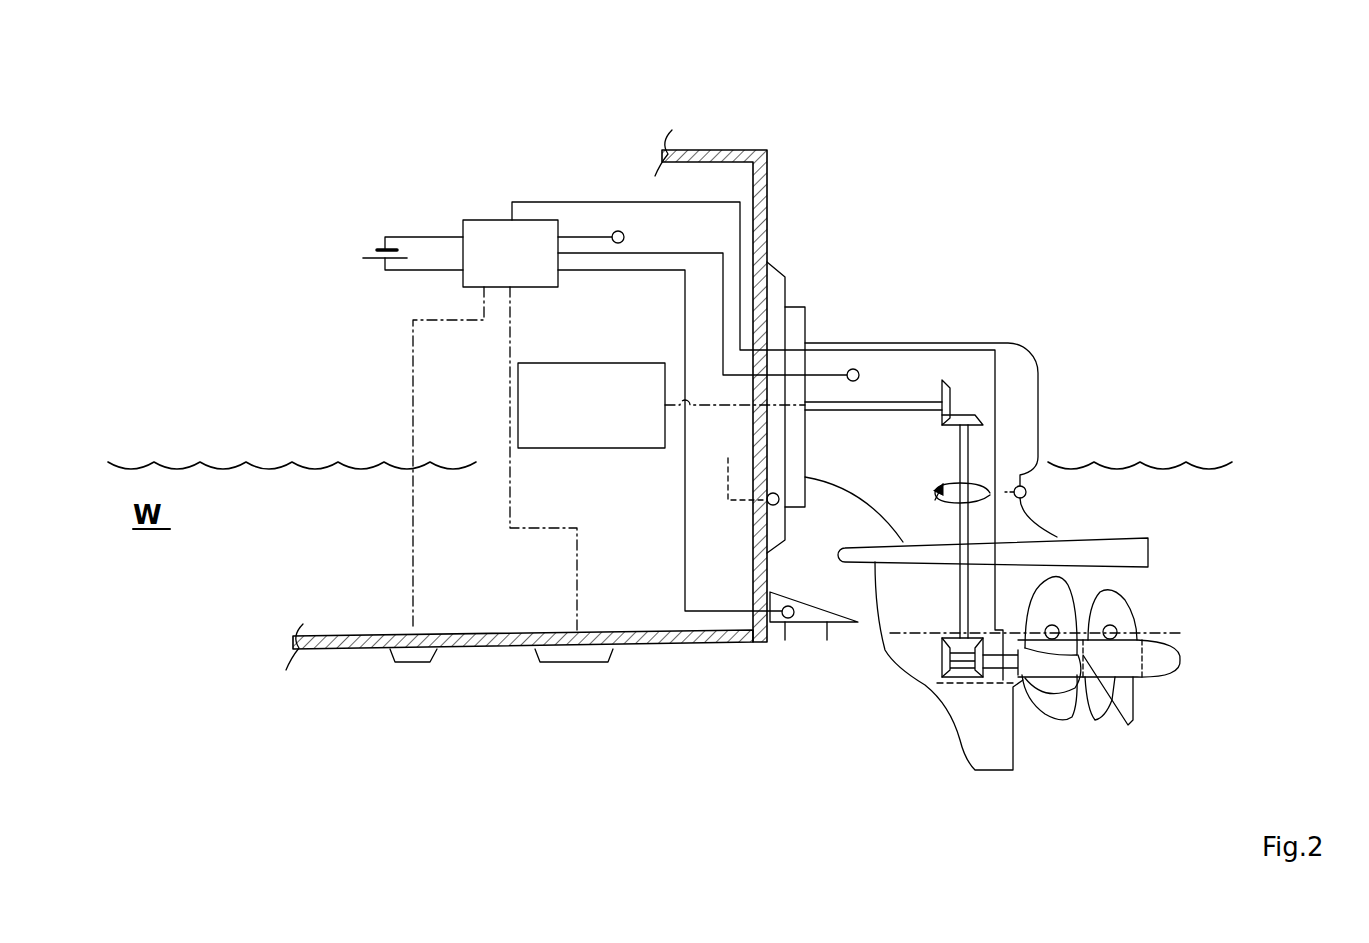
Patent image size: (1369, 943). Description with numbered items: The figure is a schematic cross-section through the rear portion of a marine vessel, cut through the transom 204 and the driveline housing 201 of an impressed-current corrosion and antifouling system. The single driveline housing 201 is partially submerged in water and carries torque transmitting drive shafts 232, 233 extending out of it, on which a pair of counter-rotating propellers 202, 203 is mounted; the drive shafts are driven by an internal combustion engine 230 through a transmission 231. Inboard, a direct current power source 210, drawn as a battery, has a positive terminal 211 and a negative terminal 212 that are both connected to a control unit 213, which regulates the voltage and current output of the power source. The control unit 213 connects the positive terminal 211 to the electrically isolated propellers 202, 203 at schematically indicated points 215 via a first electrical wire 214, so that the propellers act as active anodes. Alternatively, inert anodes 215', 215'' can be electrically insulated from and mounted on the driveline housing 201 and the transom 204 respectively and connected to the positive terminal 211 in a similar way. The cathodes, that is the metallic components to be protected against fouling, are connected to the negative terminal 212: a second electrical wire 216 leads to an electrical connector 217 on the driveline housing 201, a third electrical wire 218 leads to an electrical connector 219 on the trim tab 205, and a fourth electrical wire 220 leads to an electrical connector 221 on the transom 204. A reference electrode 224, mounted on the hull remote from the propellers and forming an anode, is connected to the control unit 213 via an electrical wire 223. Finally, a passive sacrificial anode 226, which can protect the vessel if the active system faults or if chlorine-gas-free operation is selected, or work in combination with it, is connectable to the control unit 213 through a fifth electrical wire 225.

The driveline housing 201 is at (1038, 412).
The propeller 202 is at (1155, 648).
The propeller 203 is at (1067, 712).
The transom 204 is at (767, 170).
The trim tab 205 is at (827, 623).
The direct current power source 210 is at (340, 258).
The positive terminal 211 is at (375, 233).
The negative terminal 212 is at (372, 270).
The control unit 213 is at (488, 237).
The first electrical wire 214 is at (995, 392).
The connection points 215 is at (1166, 605).
The inert anode 215' is at (1110, 458).
The inert anode 215'' is at (819, 588).
The second electrical wire 216 is at (741, 285).
The electrical connector 217 is at (860, 368).
The third electrical wire 218 is at (685, 580).
The electrical connector 219 is at (783, 623).
The fourth electrical wire 220 is at (588, 237).
The electrical connector 221 is at (625, 237).
The electrical wire 223 is at (413, 435).
The reference electrode 224 is at (400, 662).
The fifth electrical wire 225 is at (550, 530).
The sacrificial anode 226 is at (576, 662).
The internal combustion engine 230 is at (568, 450).
The transmission 231 is at (972, 520).
The drive shaft 232 is at (995, 675).
The drive shaft 233 is at (957, 672).